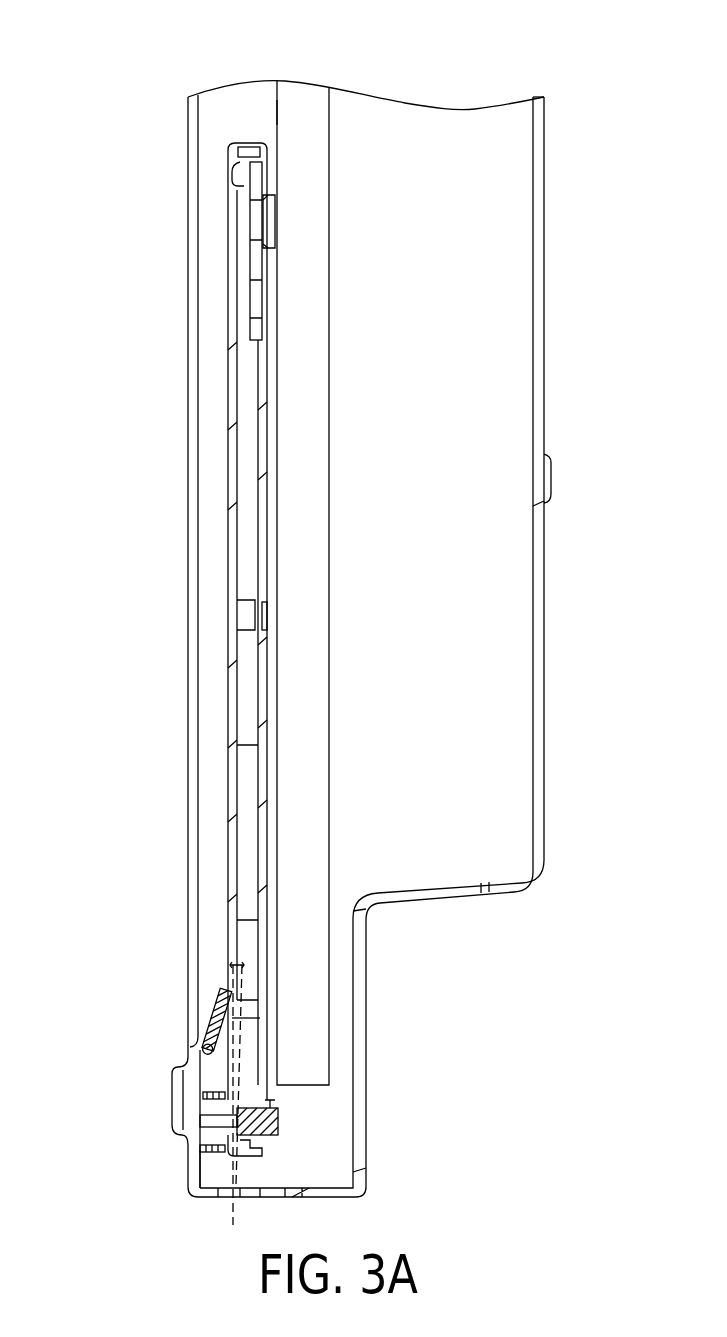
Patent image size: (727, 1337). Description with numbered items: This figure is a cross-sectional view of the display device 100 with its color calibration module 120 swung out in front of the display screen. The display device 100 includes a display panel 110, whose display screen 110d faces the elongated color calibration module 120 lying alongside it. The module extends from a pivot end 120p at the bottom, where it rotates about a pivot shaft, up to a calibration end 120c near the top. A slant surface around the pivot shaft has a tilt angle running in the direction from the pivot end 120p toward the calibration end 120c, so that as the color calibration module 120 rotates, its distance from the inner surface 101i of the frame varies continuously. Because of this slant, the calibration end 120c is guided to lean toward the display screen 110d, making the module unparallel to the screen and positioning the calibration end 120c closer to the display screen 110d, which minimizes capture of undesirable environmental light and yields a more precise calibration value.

The display device 100 is at (144, 40).
The display panel 110 is at (354, 118).
The display screen 110d is at (277, 112).
The color calibration module 120 is at (213, 430).
The calibration end 120c is at (270, 220).
The pivot end 120p is at (268, 1105).
The inner surface 101i is at (200, 1177).